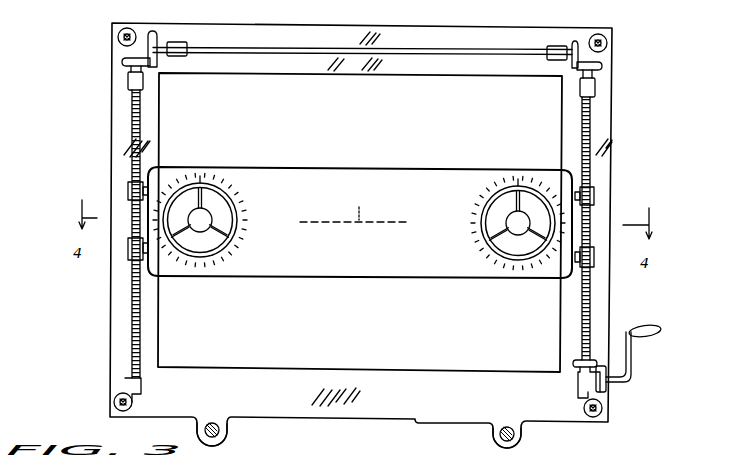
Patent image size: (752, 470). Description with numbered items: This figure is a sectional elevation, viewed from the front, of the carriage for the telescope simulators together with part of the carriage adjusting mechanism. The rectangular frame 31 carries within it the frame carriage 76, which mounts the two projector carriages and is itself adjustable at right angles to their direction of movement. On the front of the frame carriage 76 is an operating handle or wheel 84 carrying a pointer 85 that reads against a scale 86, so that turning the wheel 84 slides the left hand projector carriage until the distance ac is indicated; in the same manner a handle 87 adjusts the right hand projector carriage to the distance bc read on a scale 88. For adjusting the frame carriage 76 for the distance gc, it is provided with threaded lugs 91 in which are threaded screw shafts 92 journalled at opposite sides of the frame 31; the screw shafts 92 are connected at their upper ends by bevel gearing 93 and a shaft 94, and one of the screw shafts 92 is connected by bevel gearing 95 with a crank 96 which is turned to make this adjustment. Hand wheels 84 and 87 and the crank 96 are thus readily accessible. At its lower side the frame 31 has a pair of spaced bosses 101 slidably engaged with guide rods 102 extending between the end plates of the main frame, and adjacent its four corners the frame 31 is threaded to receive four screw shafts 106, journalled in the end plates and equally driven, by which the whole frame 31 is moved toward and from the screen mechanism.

The rectangular frame 31 is at (417, 422).
The frame carriage 76 is at (404, 279).
The operating handle or wheel 84 is at (238, 204).
The pointer 85 is at (204, 181).
The scale 86 is at (233, 183).
The handle 87 is at (483, 205).
The scale 88 is at (527, 179).
The threaded lugs 91 is at (128, 190).
The screw shafts 92 is at (592, 164).
The bevel gearing 93 is at (153, 65).
The shaft 94 is at (302, 47).
The bevel gearing 95 is at (574, 364).
The crank 96 is at (633, 357).
The spaced bosses 101 is at (228, 436).
The guide rods 102 is at (209, 439).
The screw shafts 106 is at (118, 38).